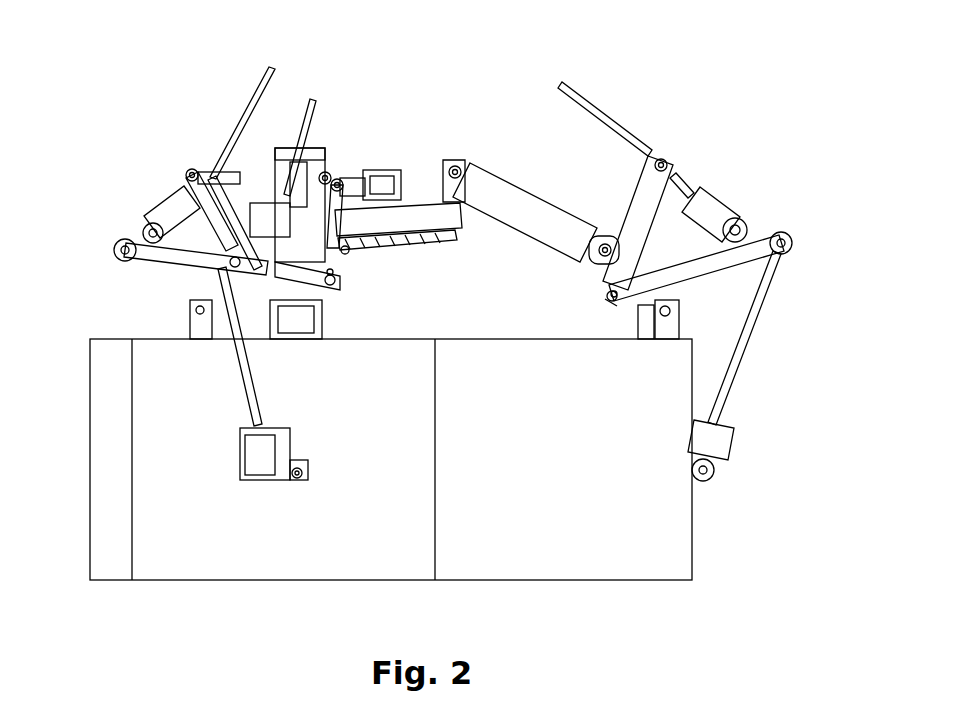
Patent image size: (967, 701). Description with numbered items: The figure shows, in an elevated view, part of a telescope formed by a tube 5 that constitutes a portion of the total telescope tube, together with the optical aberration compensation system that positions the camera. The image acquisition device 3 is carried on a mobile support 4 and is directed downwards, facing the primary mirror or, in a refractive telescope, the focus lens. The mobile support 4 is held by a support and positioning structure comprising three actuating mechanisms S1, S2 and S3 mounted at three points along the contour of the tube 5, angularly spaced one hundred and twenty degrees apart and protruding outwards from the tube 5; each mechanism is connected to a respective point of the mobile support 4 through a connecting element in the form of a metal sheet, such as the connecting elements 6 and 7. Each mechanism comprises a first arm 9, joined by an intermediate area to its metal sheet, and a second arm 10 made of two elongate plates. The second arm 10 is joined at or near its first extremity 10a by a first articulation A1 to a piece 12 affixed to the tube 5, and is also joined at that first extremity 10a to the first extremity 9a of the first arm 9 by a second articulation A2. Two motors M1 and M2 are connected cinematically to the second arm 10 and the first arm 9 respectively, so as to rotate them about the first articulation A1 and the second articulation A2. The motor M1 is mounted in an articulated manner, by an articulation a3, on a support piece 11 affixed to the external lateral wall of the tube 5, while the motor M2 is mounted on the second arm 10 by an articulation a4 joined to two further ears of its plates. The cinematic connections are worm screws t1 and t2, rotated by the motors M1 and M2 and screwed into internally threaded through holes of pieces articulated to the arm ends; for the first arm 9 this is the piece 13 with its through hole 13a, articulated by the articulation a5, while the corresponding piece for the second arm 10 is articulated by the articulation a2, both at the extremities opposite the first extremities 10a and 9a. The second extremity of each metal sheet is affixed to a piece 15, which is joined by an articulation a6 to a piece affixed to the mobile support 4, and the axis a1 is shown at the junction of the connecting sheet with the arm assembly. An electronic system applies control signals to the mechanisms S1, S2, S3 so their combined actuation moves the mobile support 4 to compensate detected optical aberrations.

The actuating mechanism S1 is at (742, 118).
The actuating mechanism S2 is at (356, 95).
The actuating mechanism S3 is at (155, 125).
The worm screw t1 is at (225, 290).
The worm screw t2 is at (258, 86).
The image acquisition device 3 is at (425, 240).
The mobile support 4 is at (415, 220).
The tube 5 is at (678, 556).
The connecting element 6 is at (517, 200).
The connecting element 7 is at (370, 178).
The first arm 9 is at (168, 196).
The first extremity of first arm 9a is at (335, 272).
The second arm 10 is at (165, 268).
The first extremity of second arm 10a is at (605, 303).
The support piece 11 is at (302, 485).
The piece 12 is at (640, 325).
The piece 13 is at (205, 172).
The through hole 13a is at (212, 172).
The piece 15 is at (384, 170).
The axis a1 is at (350, 252).
The articulation a2 is at (118, 245).
The articulation a3 is at (297, 480).
The articulation a4 is at (145, 230).
The articulation a5 is at (190, 168).
The articulation a6 is at (395, 180).
The first articulation A1 is at (198, 310).
The second articulation A2 is at (232, 272).
The motor M1 is at (255, 452).
The motor M2 is at (150, 202).